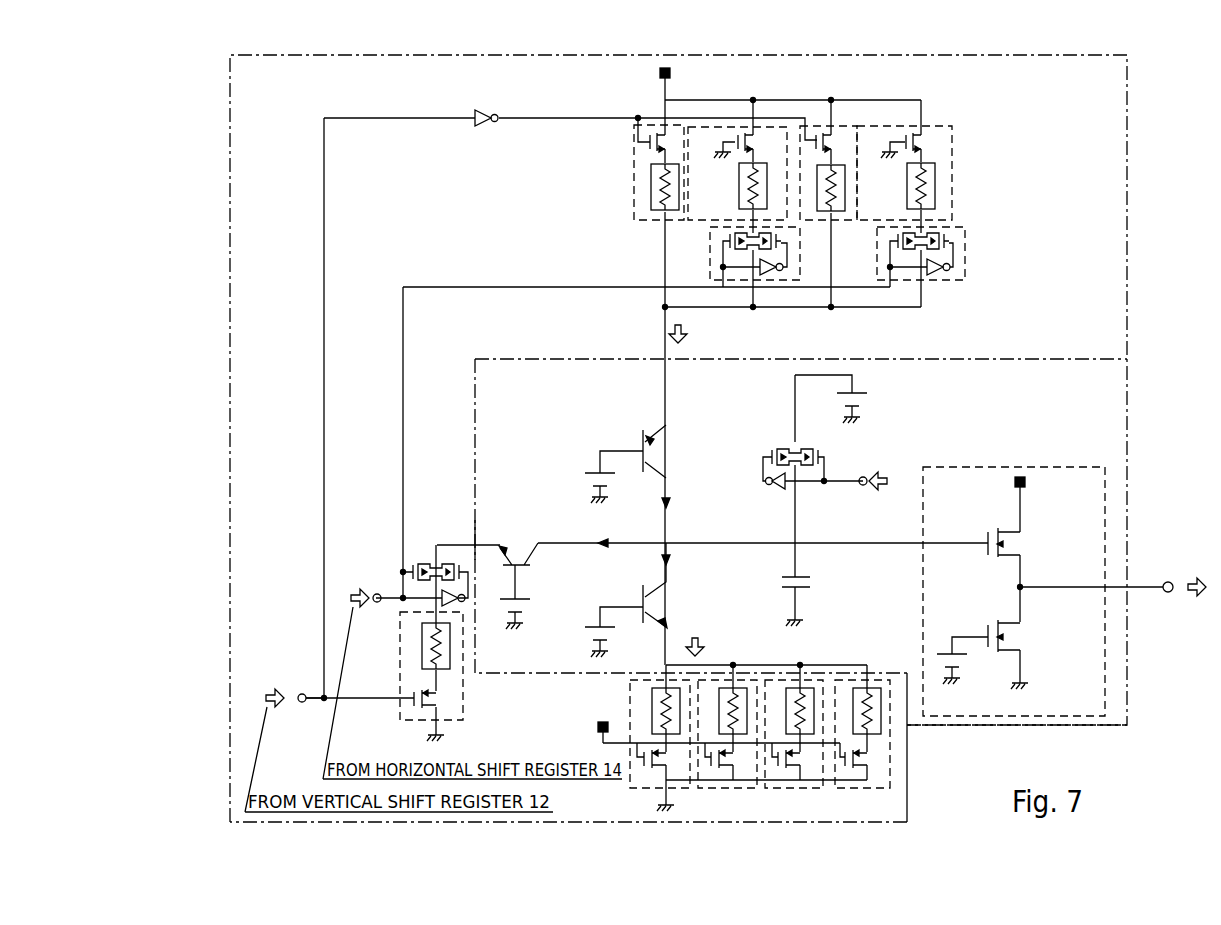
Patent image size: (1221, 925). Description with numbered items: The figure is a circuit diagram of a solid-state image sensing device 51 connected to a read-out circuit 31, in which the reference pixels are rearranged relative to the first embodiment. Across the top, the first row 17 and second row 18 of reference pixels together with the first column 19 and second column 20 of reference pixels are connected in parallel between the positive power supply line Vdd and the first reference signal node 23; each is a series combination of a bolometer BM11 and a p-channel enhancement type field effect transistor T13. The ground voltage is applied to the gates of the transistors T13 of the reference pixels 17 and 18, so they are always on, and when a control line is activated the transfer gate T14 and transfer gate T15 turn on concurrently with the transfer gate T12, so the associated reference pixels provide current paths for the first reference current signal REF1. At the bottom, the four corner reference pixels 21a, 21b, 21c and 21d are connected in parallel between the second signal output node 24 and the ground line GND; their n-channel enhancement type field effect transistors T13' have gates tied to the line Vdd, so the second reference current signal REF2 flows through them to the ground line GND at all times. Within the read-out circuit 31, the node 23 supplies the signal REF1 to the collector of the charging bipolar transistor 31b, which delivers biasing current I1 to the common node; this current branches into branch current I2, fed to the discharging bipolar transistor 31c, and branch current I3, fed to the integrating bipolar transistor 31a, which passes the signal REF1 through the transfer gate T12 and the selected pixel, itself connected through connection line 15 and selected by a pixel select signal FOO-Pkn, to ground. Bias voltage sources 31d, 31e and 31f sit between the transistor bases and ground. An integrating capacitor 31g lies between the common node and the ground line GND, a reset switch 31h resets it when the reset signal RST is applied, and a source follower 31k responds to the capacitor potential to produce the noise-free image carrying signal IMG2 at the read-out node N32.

The solid-state image sensing device 51 is at (230, 92).
The read-out circuit 31 is at (1128, 385).
The first reference signal node 23 is at (655, 359).
The connection line 15 is at (475, 535).
The first row of reference image pick-up pixels 17 is at (713, 212).
The second row of reference image pick-up pixels 18 is at (952, 151).
The first column of reference pixels 19 is at (845, 135).
The second column of reference pixels 20 is at (634, 183).
The second signal output node 24 is at (666, 666).
The reference pixel 21a is at (810, 790).
The reference pixel 21b is at (890, 775).
The reference pixel 21c is at (730, 790).
The reference pixel 21d is at (638, 790).
The integrating bipolar transistor 31a is at (522, 566).
The charging bipolar transistor 31b is at (658, 467).
The discharging bipolar transistor 31c is at (660, 597).
The bias voltage source 31d is at (525, 612).
The bias voltage source 31e is at (597, 452).
The bias voltage source 31f is at (595, 630).
The integrating capacitor 31g is at (812, 582).
The reset switch 31h is at (785, 440).
The source follower 31k is at (977, 467).
The transfer gate T12 is at (434, 560).
The p-channel enhancement type field effect transistor T13 is at (613, 431).
The n-channel enhancement type field effect transistor T13' is at (724, 457).
The transfer gate T14 is at (710, 250).
The transfer gate T15 is at (965, 250).
The bolometer BM11 is at (650, 195).
The read-out node N32 is at (1170, 581).
The image carrying signal IMG2 is at (1196, 597).
The first reference current signal REF1 is at (688, 326).
The second reference current signal REF2 is at (700, 640).
The reset signal RST is at (880, 478).
The positive power supply line Vdd is at (672, 70).
The ground line GND is at (590, 499).
The biasing current I1 is at (673, 502).
The branch current I2 is at (660, 563).
The branch current I3 is at (602, 543).
The pixel select signal FOO-Pkn is at (400, 705).